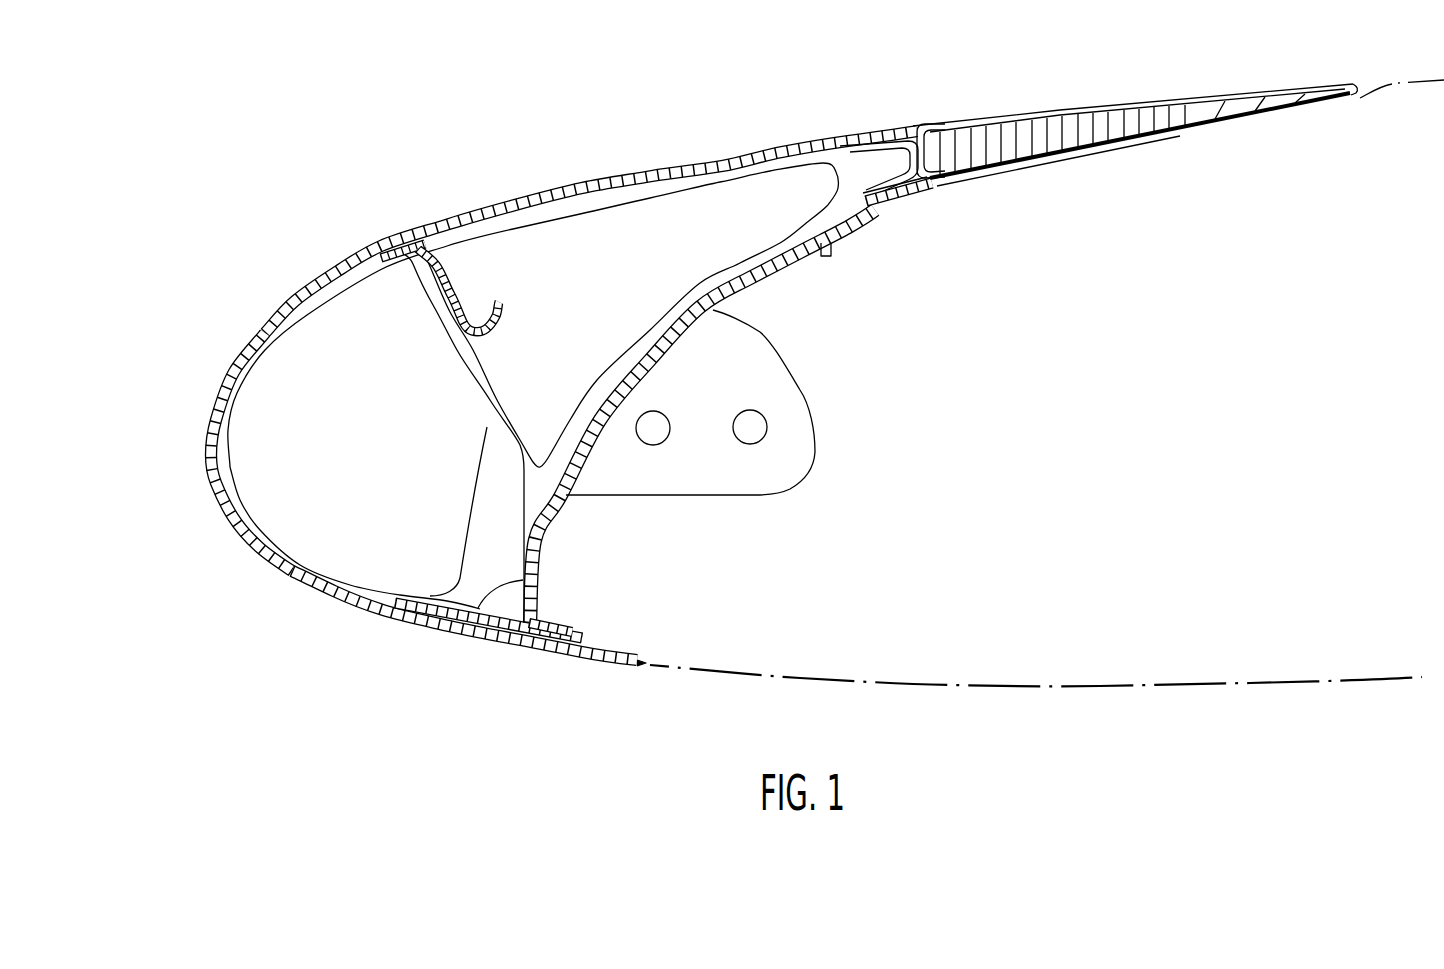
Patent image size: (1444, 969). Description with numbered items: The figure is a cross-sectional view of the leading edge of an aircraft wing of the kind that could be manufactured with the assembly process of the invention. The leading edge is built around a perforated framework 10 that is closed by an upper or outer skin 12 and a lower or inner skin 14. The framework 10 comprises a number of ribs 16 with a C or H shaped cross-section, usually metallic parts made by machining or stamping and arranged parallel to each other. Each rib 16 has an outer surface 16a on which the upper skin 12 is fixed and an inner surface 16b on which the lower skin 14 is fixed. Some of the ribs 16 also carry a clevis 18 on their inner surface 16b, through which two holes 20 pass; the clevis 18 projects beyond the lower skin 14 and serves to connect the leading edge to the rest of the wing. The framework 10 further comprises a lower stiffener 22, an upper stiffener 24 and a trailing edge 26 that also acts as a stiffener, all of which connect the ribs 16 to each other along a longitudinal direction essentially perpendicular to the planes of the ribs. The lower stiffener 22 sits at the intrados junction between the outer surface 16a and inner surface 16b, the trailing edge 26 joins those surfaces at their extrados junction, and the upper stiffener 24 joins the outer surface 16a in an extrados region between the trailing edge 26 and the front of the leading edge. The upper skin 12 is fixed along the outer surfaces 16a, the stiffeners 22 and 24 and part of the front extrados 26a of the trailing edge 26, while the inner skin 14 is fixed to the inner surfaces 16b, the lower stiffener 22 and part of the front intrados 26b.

The perforated framework 10 is at (598, 180).
The upper skin 12 is at (299, 296).
The lower skin 14 is at (760, 272).
The rib 16 is at (300, 515).
The outer surface 16a is at (231, 384).
The inner surface 16b is at (588, 448).
The clevis 18 is at (803, 421).
The hole 20 is at (662, 442).
The lower stiffener 22 is at (471, 607).
The upper stiffener 24 is at (455, 280).
The trailing edge 26 is at (994, 122).
The front extrados 26a is at (797, 147).
The front intrados 26b is at (863, 213).